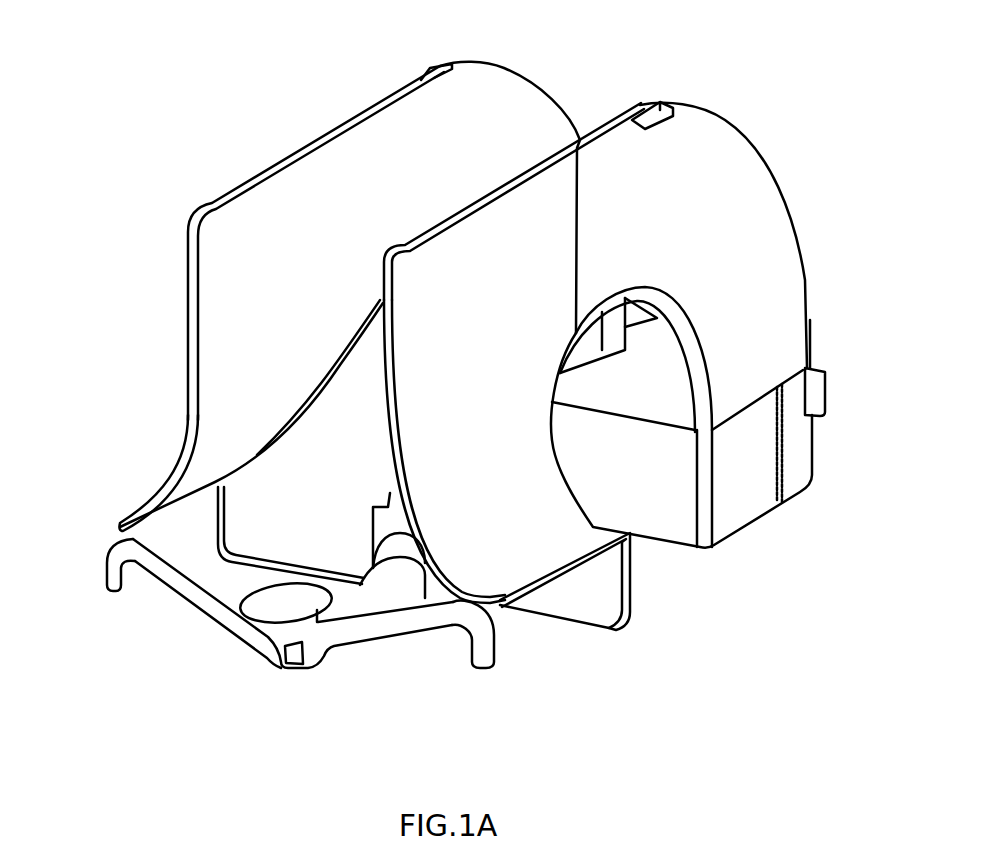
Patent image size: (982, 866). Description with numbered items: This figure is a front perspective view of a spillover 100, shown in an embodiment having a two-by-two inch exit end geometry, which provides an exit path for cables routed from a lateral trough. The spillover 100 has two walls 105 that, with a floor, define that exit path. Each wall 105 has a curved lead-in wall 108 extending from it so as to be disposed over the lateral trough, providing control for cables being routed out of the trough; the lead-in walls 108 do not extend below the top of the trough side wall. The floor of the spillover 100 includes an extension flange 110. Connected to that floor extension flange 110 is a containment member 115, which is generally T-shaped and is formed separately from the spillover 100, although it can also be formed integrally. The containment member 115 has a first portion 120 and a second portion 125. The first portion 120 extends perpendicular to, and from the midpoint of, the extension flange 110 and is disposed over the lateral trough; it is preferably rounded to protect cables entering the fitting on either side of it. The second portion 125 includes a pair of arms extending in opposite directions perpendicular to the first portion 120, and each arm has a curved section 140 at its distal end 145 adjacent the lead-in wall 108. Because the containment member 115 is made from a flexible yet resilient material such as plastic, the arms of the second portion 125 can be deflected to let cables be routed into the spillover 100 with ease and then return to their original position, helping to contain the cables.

The spillover 100 is at (212, 166).
The wall 105 is at (331, 168).
The curved lead-in wall 108 is at (173, 460).
The extension flange 110 is at (582, 602).
The containment member 115 is at (236, 652).
The first portion 120 is at (247, 592).
The second portion 125 is at (367, 638).
The curved section 140 is at (135, 562).
The distal end 145 is at (103, 602).